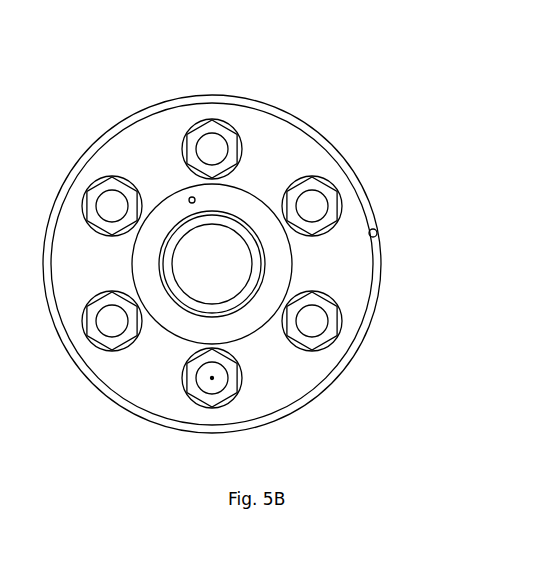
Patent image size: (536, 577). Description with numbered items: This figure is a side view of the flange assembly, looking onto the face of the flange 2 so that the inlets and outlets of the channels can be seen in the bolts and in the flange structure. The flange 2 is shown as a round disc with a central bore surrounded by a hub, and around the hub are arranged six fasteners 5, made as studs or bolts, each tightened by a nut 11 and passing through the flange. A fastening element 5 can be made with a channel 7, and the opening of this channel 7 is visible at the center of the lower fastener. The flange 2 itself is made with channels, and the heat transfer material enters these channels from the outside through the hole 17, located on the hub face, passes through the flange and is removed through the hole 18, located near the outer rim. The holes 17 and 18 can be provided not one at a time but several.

The flange 2 is at (305, 165).
The fastener 5 is at (305, 200).
The channel 7 is at (212, 378).
The nut 11 is at (125, 346).
The hole 17 is at (190, 197).
The hole 18 is at (377, 231).